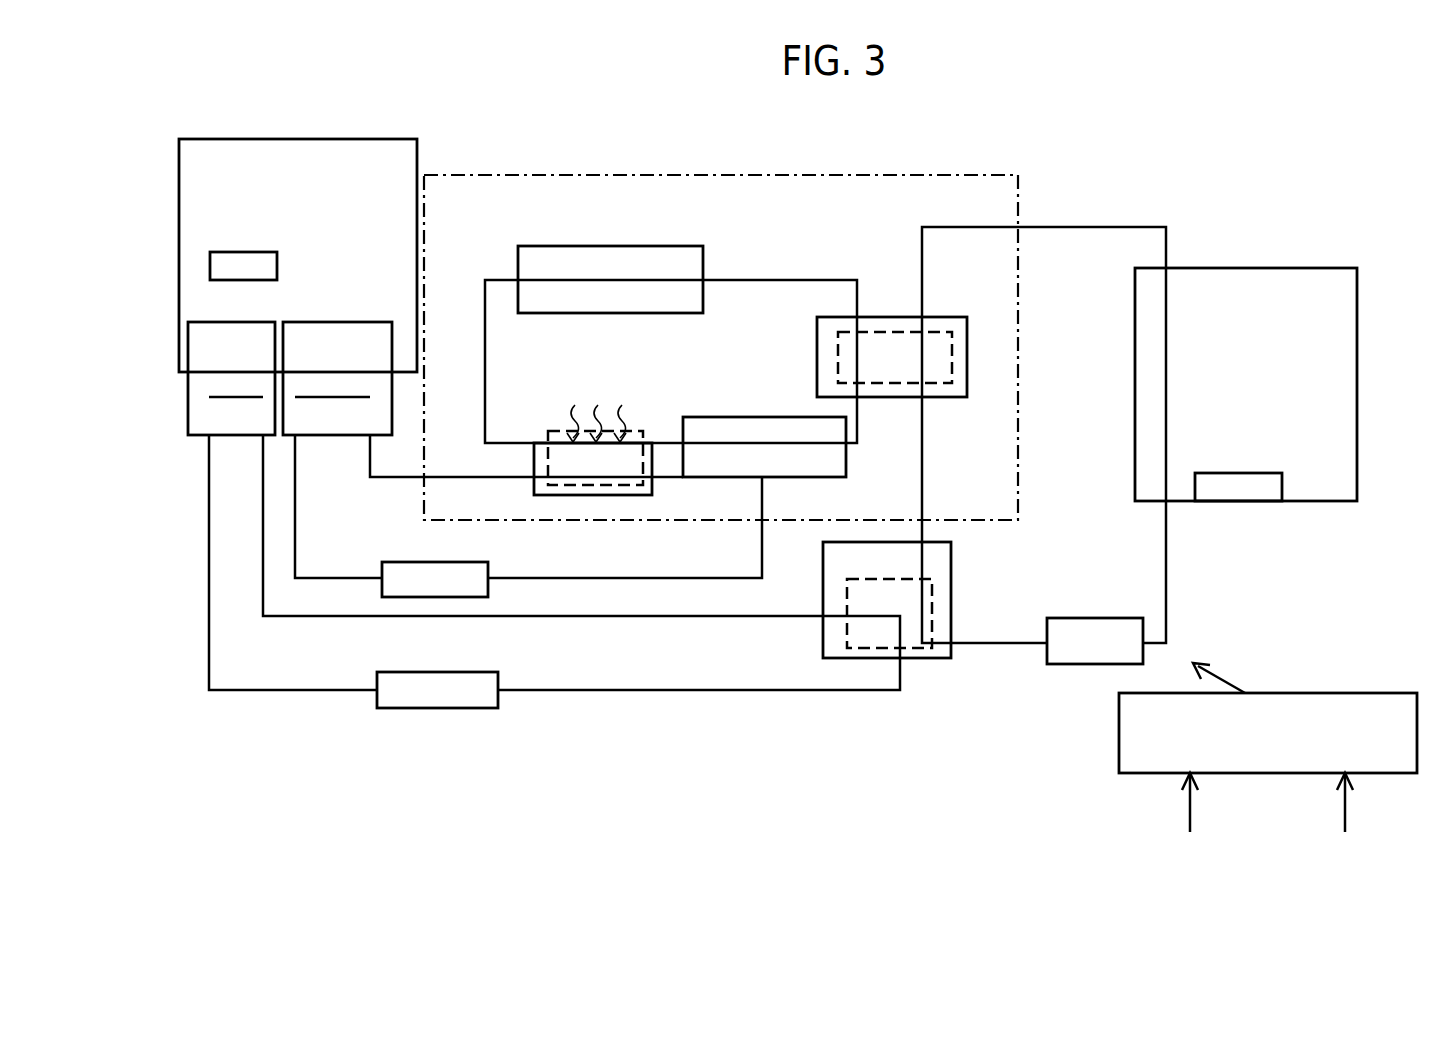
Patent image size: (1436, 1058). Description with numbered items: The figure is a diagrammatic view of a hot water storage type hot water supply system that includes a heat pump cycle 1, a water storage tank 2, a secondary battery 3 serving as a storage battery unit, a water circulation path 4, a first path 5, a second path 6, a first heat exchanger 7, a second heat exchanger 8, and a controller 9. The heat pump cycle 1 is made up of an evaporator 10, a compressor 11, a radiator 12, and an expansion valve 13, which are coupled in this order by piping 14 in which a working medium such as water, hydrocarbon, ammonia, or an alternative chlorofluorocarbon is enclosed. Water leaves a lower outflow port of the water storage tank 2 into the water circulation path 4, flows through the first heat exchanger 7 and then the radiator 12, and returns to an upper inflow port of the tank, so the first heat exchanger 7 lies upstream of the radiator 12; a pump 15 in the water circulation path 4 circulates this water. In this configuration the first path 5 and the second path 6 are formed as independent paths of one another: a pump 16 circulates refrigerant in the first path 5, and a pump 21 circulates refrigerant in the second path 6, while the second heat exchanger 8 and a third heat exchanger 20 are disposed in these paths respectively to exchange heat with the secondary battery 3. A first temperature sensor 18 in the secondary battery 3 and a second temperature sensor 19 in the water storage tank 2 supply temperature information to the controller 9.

The heat pump cycle 1 is at (706, 178).
The water storage tank 2 is at (1280, 268).
The secondary battery 3 is at (328, 139).
The water circulation path 4 is at (1073, 227).
The first path 5 is at (555, 578).
The second path 6 is at (680, 690).
The first heat exchanger 7 is at (922, 660).
The second heat exchanger 8 is at (392, 403).
The controller 9 is at (1350, 693).
The evaporator 10 is at (635, 460).
The compressor 11 is at (570, 246).
The radiator 12 is at (817, 350).
The expansion valve 13 is at (742, 417).
The piping 14 is at (752, 280).
The pump 15 is at (1075, 664).
The pump 16 is at (407, 562).
The first temperature sensor 18 is at (210, 258).
The second temperature sensor 19 is at (1250, 501).
The third heat exchanger 20 is at (188, 402).
The pump 21 is at (400, 708).